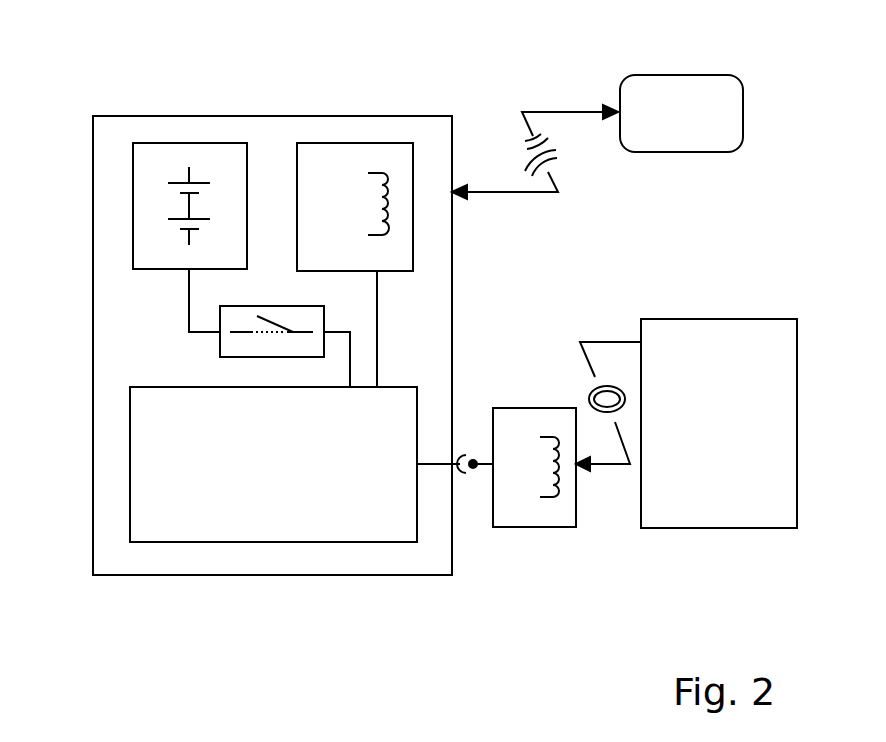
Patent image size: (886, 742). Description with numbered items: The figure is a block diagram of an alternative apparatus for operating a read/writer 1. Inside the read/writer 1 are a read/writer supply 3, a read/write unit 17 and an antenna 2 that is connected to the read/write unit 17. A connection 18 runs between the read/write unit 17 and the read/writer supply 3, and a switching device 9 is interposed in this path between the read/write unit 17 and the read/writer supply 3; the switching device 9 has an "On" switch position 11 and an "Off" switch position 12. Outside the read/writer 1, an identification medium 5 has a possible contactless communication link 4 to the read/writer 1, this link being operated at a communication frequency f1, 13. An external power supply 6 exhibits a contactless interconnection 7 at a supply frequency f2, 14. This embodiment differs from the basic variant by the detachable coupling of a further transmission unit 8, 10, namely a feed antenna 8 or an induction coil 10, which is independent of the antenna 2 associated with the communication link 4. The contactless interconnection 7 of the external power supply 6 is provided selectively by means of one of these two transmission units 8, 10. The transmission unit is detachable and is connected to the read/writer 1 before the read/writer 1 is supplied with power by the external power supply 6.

The read/writer 1 is at (135, 116).
The antenna 2 is at (313, 143).
The read/writer supply 3 is at (211, 143).
The contactless communication link 4 is at (535, 110).
The communication frequency f1 13 is at (563, 110).
The identification medium 5 is at (677, 75).
The external power supply 6 is at (713, 528).
The contactless interconnection 7 is at (611, 487).
The supply frequency f2 14 is at (610, 466).
The feed antenna 8 is at (534, 520).
The induction coil 10 is at (533, 527).
The switching device 9 is at (182, 469).
The "On" switch position 11 is at (263, 332).
The "Off" switch position 12 is at (273, 322).
The read/write unit 17 is at (362, 542).
The connection 18 is at (188, 295).